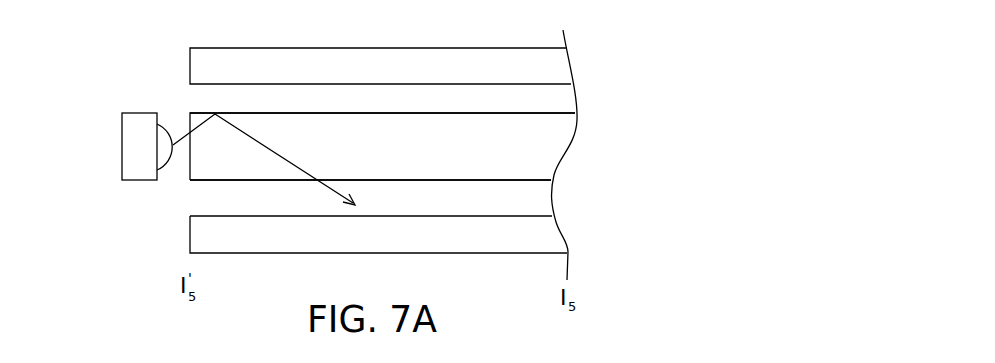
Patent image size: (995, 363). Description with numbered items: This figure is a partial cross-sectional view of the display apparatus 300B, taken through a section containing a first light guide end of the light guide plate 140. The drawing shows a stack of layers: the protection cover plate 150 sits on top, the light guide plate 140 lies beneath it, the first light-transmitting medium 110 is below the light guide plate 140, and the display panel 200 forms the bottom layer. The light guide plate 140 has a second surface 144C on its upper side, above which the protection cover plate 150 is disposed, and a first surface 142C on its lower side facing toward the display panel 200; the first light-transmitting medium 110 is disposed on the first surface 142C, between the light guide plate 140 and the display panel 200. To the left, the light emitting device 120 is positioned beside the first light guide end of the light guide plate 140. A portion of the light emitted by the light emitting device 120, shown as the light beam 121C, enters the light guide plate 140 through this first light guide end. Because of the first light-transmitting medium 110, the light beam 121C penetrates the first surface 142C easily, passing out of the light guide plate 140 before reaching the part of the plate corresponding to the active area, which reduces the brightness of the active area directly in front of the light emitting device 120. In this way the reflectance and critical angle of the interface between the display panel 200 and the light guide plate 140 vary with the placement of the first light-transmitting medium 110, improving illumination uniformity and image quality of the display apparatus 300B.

The light emitting device 120 is at (132, 150).
The light beam 121C is at (252, 140).
The second surface 144C is at (284, 110).
The first surface 142C is at (493, 184).
The protection cover plate 150 is at (557, 70).
The light guide plate 140 is at (560, 148).
The first light-transmitting medium 110 is at (537, 197).
The display panel 200 is at (547, 238).
The display apparatus 300B is at (680, 302).